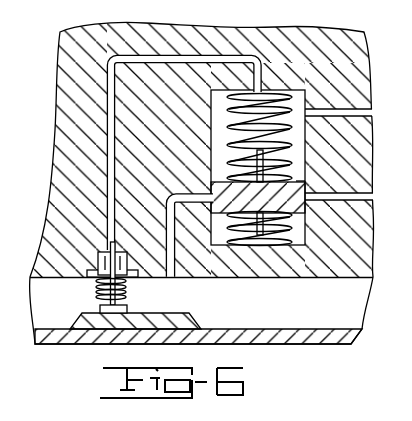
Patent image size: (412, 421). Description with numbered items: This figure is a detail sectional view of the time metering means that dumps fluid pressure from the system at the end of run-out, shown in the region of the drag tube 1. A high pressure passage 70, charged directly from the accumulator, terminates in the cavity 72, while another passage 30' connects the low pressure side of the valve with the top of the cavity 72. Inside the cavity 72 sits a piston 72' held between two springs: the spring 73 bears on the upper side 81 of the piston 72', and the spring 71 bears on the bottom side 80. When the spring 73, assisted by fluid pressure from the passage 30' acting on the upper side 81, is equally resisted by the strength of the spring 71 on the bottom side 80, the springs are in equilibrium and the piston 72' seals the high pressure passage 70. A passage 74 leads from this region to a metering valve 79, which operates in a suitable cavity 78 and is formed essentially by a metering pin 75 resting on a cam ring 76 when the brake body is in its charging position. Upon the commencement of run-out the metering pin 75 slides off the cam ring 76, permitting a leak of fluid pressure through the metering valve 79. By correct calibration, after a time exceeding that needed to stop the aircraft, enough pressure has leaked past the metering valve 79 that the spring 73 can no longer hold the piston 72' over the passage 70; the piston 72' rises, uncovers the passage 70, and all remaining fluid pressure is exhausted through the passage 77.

The drag tube 1 is at (270, 338).
The passage 30' is at (351, 104).
The passage 70 is at (356, 198).
The spring 71 is at (290, 244).
The cavity 72 is at (226, 138).
The piston 72' is at (285, 192).
The spring 73 is at (188, 172).
The passage 74 is at (234, 57).
The metering pin 75 is at (127, 311).
The cam ring 76 is at (190, 322).
The passage 77 is at (173, 259).
The cavity 78 is at (98, 275).
The metering valve 79 is at (115, 247).
The bottom side of the piston 80 is at (286, 223).
The upper side of the piston 81 is at (297, 178).